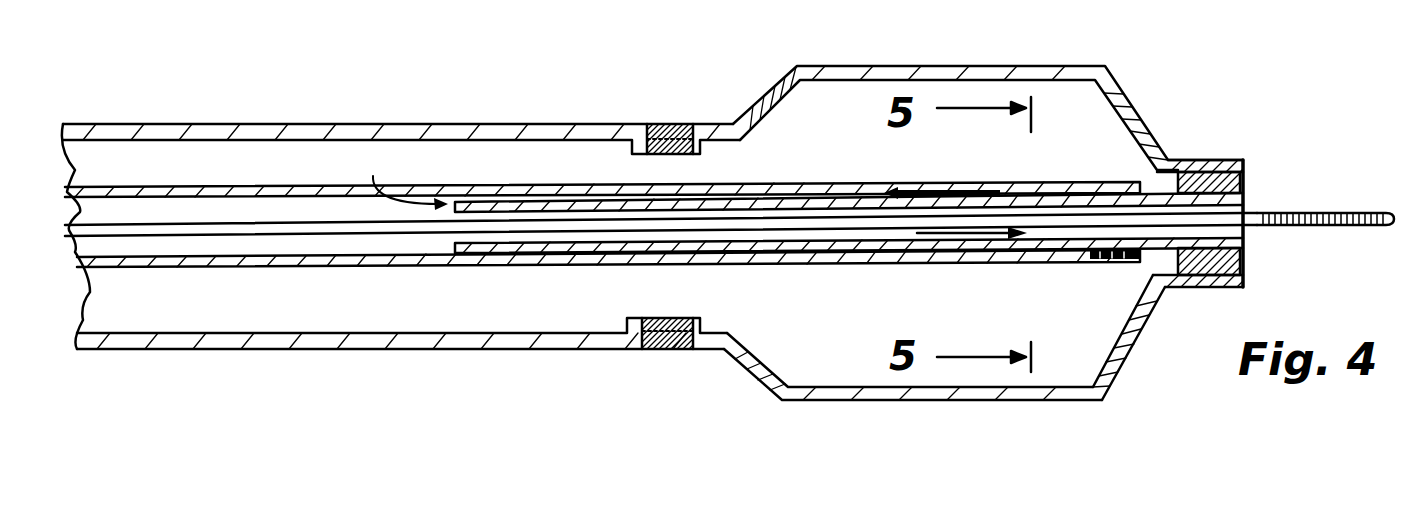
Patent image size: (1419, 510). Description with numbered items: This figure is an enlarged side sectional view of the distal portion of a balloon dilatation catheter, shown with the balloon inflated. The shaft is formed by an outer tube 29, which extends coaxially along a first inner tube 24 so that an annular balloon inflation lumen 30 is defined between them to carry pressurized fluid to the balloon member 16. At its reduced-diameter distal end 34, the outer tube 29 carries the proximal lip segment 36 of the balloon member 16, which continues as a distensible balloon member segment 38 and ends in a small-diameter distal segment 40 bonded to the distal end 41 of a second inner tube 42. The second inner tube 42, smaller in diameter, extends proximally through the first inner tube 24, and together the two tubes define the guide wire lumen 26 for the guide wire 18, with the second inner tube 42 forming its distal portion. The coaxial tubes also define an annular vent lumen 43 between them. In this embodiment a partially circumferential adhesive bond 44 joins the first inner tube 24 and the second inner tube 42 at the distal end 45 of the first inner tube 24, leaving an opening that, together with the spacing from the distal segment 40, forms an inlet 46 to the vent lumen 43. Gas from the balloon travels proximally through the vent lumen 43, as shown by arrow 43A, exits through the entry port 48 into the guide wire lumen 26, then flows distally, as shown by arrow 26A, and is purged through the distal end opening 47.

The balloon member 16 is at (948, 404).
The guide wire 18 is at (1293, 227).
The first inner tube 24 is at (293, 263).
The guide wire lumen 26 is at (283, 203).
The arrow 26A is at (955, 250).
The outer tube 29 is at (110, 132).
The balloon inflation lumen 30 is at (183, 150).
The distal end of outer tube 34 is at (678, 138).
The proximal lip segment 36 is at (675, 347).
The distensible balloon member segment 38 is at (1087, 403).
The distal segment 40 is at (1190, 289).
The distal end of second inner tube 41 is at (1247, 167).
The second inner tube 42 is at (527, 256).
The vent lumen 43 is at (587, 198).
The arrow 43A is at (965, 188).
The adhesive bond 44 is at (1090, 262).
The distal end of first inner tube 45 is at (1118, 182).
The inlet 46 is at (1157, 186).
The distal end opening 47 is at (1247, 208).
The entry port 48 is at (395, 175).